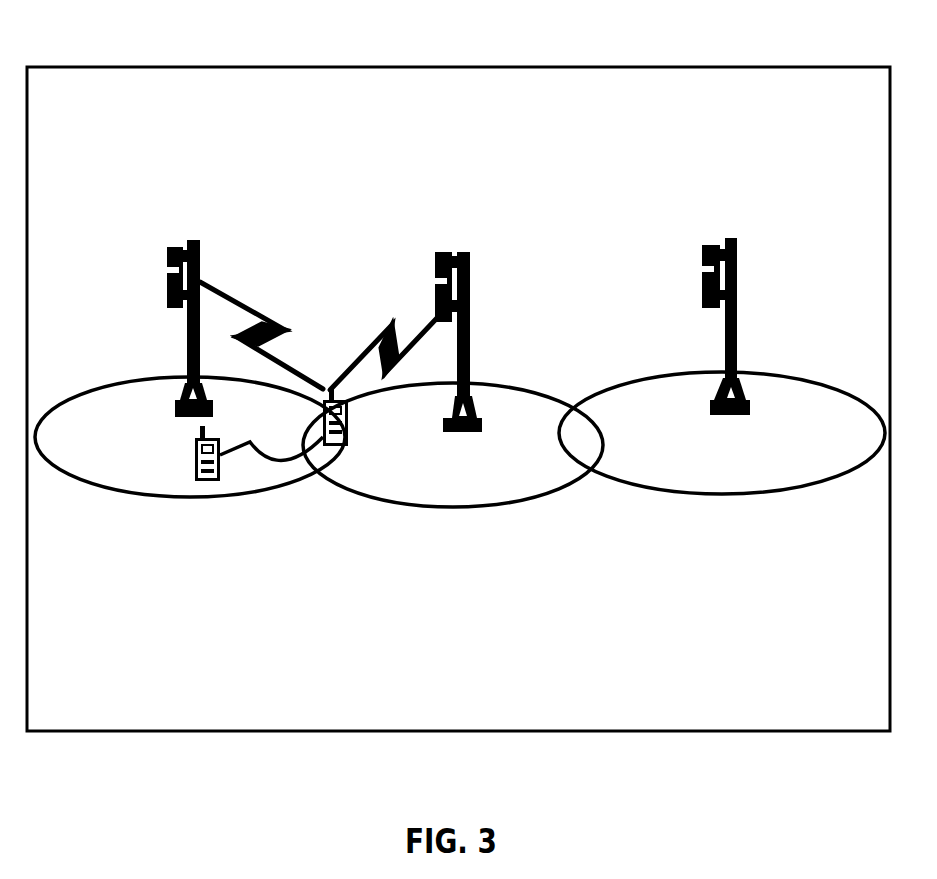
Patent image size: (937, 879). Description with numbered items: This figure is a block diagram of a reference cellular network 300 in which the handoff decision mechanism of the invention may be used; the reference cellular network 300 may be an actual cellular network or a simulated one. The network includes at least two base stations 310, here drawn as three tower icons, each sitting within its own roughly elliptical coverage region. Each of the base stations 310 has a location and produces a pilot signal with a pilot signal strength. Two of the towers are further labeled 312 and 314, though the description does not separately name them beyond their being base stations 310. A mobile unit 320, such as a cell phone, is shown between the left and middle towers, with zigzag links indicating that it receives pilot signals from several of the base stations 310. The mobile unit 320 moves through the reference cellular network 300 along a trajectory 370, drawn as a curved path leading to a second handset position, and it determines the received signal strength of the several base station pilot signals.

The reference cellular network 300 is at (572, 66).
The base stations 310 is at (504, 274).
The base station 312 is at (470, 350).
The base station 314 is at (737, 333).
The mobile units 320 is at (340, 447).
The trajectories 370 is at (270, 460).